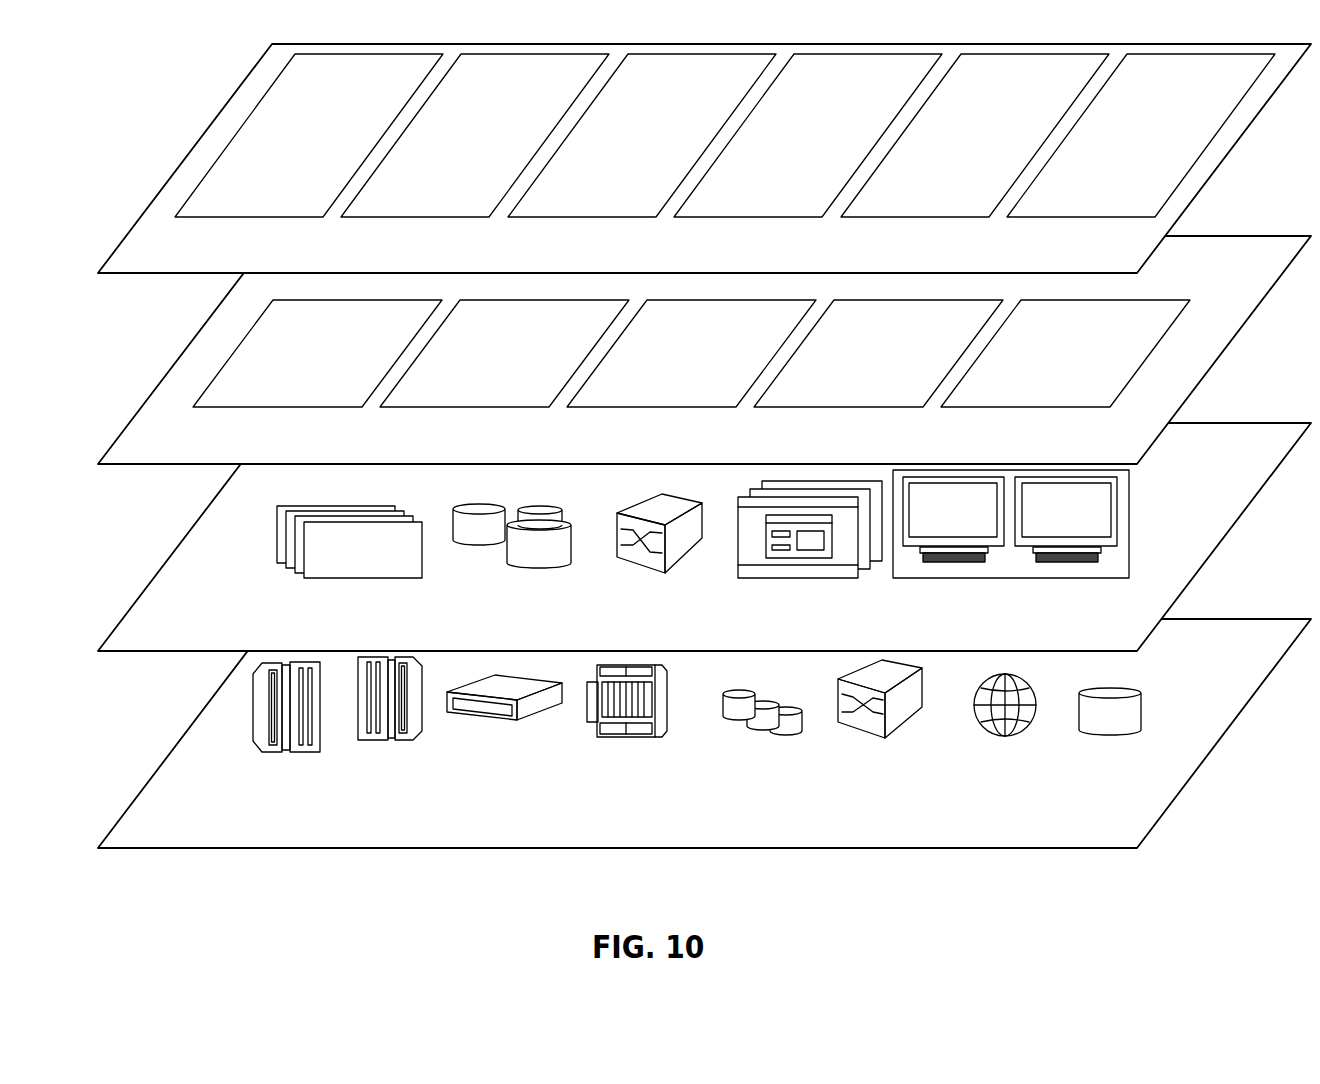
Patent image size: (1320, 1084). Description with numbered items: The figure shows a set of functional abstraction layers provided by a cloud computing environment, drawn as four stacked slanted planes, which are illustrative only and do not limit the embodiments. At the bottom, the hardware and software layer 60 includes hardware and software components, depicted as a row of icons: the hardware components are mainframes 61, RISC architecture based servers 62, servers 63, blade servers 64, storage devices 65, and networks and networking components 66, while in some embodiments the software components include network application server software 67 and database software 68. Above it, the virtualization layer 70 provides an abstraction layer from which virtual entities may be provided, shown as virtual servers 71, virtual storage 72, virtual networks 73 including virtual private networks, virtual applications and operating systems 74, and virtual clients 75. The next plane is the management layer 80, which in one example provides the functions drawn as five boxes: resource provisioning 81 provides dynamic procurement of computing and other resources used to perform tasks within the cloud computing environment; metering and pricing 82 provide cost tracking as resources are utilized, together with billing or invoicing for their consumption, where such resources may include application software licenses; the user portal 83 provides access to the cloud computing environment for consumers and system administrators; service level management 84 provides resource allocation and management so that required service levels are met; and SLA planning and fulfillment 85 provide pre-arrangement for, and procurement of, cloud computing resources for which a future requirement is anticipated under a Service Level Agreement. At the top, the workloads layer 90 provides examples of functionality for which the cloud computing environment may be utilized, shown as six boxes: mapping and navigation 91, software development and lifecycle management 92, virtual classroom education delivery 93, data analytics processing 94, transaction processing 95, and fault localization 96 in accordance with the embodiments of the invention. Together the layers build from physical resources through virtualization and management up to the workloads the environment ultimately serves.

The hardware and software layer 60 is at (153, 850).
The mainframes 61 is at (300, 753).
The RISC architecture based servers 62 is at (401, 741).
The servers 63 is at (534, 721).
The blade servers 64 is at (645, 738).
The storage devices 65 is at (760, 732).
The networks and networking components 66 is at (872, 736).
The network application server software 67 is at (1001, 737).
The database software 68 is at (1110, 736).
The virtualization layer 70 is at (153, 652).
The virtual servers 71 is at (388, 579).
The virtual storage 72 is at (545, 569).
The virtual networks 73 is at (689, 560).
The virtual applications and operating systems 74 is at (838, 579).
The virtual clients 75 is at (1012, 579).
The management layer 80 is at (153, 466).
The resource provisioning 81 is at (332, 369).
The metering and pricing 82 is at (519, 369).
The user portal 83 is at (706, 369).
The service level management 84 is at (893, 369).
The SLA planning and fulfillment 85 is at (1080, 369).
The workloads layer 90 is at (153, 275).
The mapping and navigation 91 is at (325, 147).
The software development and lifecycle management 92 is at (491, 147).
The virtual classroom education delivery 93 is at (658, 147).
The data analytics processing 94 is at (824, 147).
The transaction processing 95 is at (991, 147).
The fault localization 96 is at (1157, 147).